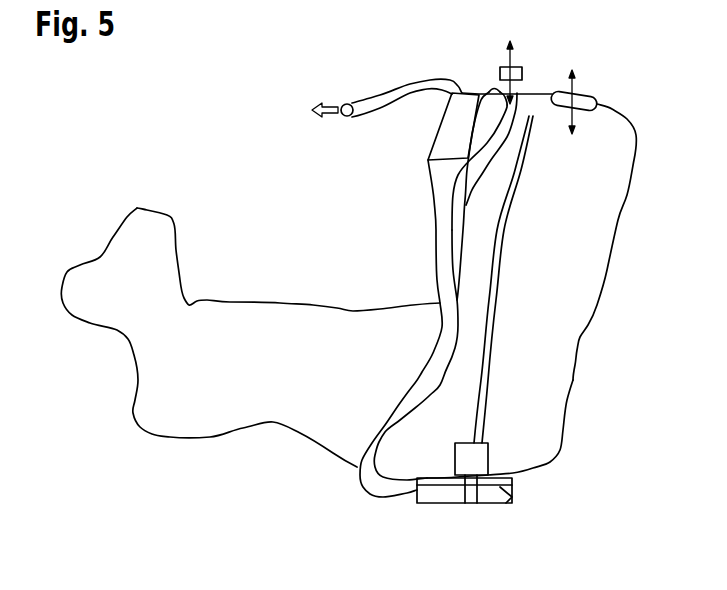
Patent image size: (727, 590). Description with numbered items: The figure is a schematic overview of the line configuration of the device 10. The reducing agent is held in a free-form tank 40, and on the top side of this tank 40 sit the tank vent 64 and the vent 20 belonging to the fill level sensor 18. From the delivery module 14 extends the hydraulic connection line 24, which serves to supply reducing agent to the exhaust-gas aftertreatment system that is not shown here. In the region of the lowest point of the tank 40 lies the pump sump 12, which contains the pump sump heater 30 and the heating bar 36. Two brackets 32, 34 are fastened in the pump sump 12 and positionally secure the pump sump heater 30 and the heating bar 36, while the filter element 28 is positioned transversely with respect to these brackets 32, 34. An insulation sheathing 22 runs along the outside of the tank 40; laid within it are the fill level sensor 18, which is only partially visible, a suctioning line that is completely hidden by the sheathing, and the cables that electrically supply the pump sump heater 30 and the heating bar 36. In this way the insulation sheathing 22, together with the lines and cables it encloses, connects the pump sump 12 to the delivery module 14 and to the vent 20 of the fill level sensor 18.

The device 10 is at (270, 126).
The pump sump 12 is at (438, 495).
The delivery module 14 is at (439, 137).
The fill level sensor 18 is at (531, 91).
The vent 20 is at (498, 73).
The insulation sheathing 22 is at (350, 484).
The hydraulic connection line 24 is at (384, 98).
The filter element 28 is at (507, 503).
The pump sump heater 30 is at (479, 462).
The bracket 32 is at (473, 505).
The bracket 34 is at (492, 522).
The heating bar 36 is at (498, 256).
The free-form tank 40 is at (137, 208).
The tank vent 64 is at (589, 97).